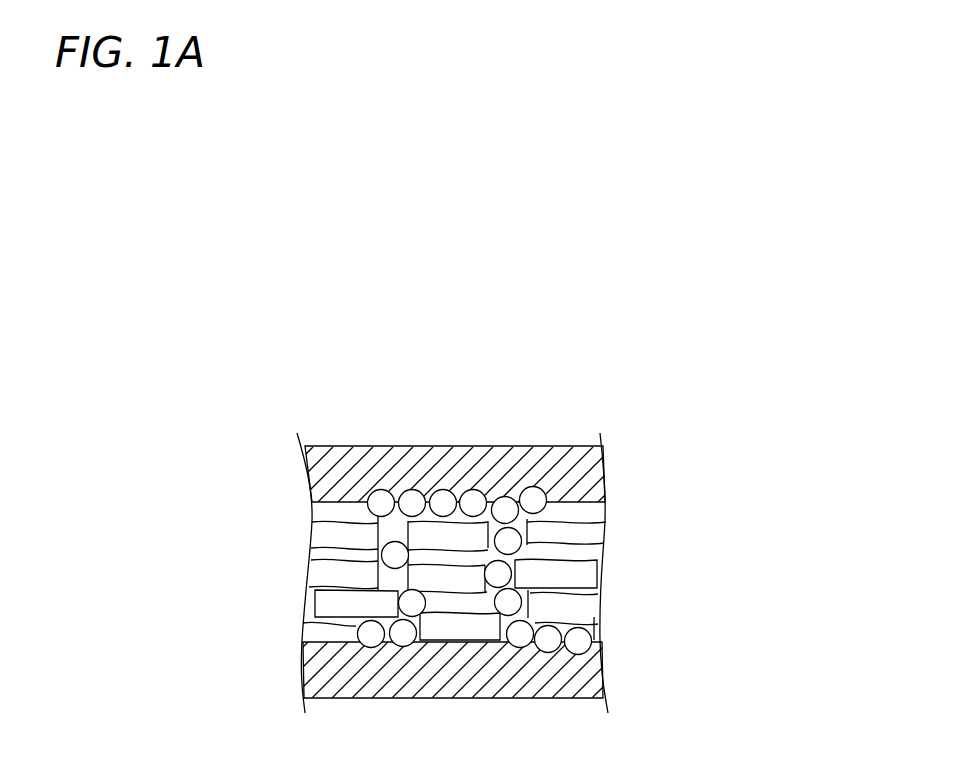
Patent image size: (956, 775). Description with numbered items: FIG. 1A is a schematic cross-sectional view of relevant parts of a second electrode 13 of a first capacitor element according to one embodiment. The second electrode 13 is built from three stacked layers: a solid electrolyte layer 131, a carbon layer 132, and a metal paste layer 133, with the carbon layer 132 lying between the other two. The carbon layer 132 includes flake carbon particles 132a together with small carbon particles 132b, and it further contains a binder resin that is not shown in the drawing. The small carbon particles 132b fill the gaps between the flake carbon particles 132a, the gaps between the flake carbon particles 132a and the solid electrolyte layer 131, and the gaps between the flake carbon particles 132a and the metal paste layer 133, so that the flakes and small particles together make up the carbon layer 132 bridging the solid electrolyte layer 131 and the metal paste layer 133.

The second electrode 13 is at (464, 310).
The solid electrolyte layer 131 is at (447, 676).
The carbon layer 132 is at (597, 595).
The flake carbon particles 132a is at (327, 574).
The small carbon particles 132b is at (368, 633).
The metal paste layer 133 is at (551, 470).